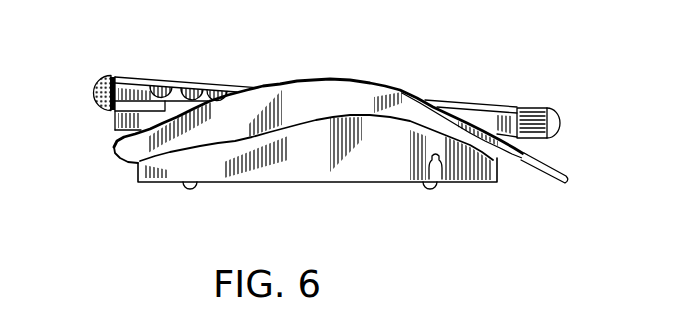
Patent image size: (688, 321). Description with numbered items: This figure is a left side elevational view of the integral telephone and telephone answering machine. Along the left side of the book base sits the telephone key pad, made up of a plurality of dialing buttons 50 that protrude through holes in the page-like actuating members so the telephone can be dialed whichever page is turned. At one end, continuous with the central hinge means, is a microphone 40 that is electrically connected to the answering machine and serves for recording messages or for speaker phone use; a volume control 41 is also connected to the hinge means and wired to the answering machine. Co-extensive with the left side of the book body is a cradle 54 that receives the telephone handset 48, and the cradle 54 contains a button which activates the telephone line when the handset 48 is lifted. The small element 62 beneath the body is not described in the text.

The microphone 40 is at (101, 79).
The volume control 41 is at (560, 122).
The telephone handset 48 is at (323, 90).
The dialing buttons 50 is at (153, 81).
The handset cradle 54 is at (319, 143).
The button / knob 62 is at (437, 178).